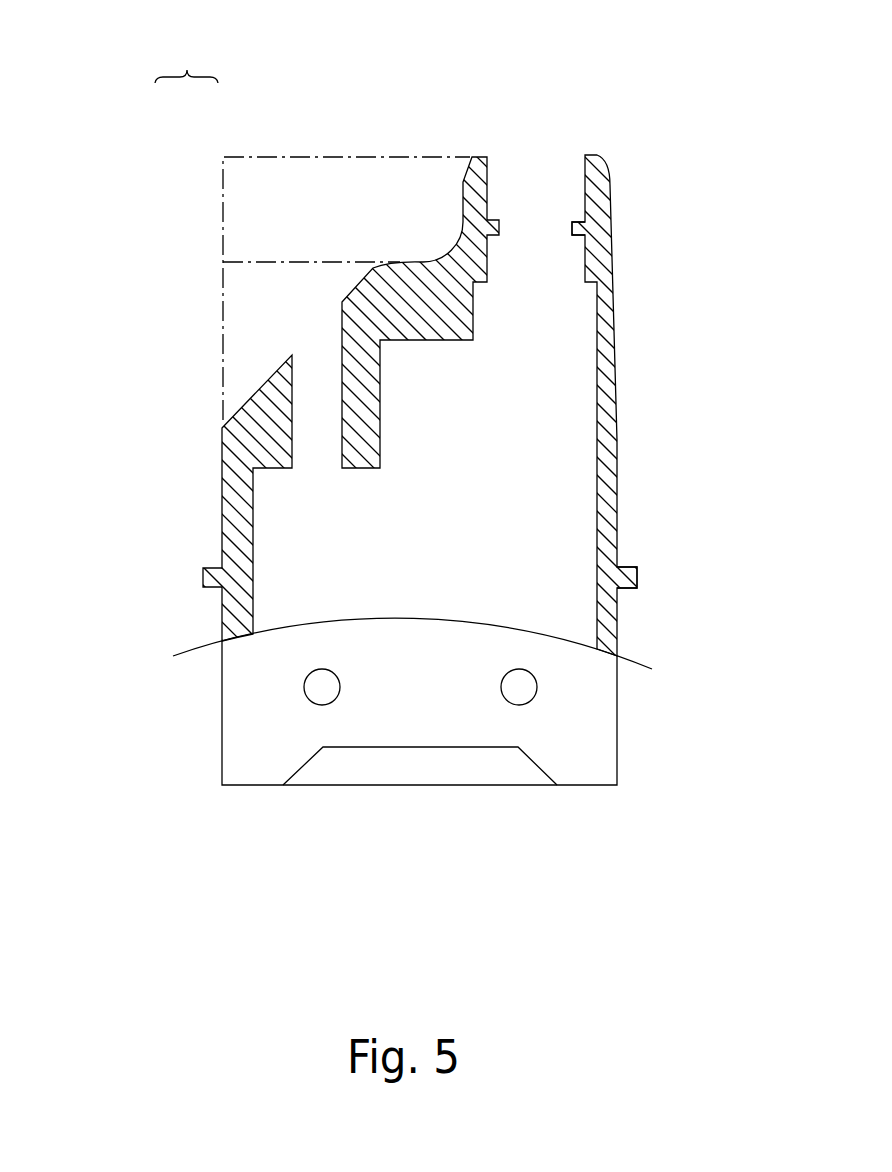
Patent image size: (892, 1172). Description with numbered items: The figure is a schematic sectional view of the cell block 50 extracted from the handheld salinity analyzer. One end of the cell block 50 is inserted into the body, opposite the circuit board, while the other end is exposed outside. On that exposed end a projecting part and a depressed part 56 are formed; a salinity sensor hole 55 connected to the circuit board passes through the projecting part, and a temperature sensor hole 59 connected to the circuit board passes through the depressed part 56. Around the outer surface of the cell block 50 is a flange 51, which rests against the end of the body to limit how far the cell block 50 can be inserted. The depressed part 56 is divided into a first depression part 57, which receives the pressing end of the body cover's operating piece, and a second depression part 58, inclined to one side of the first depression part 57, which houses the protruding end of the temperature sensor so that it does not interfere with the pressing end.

The cell block 50 is at (640, 346).
The flange 51 is at (625, 565).
The salinity sensor hole 55 is at (586, 270).
The depressed part 56 is at (186, 46).
The first depression part 57 is at (385, 214).
The second depression part 58 is at (266, 295).
The temperature sensor hole 59 is at (280, 425).